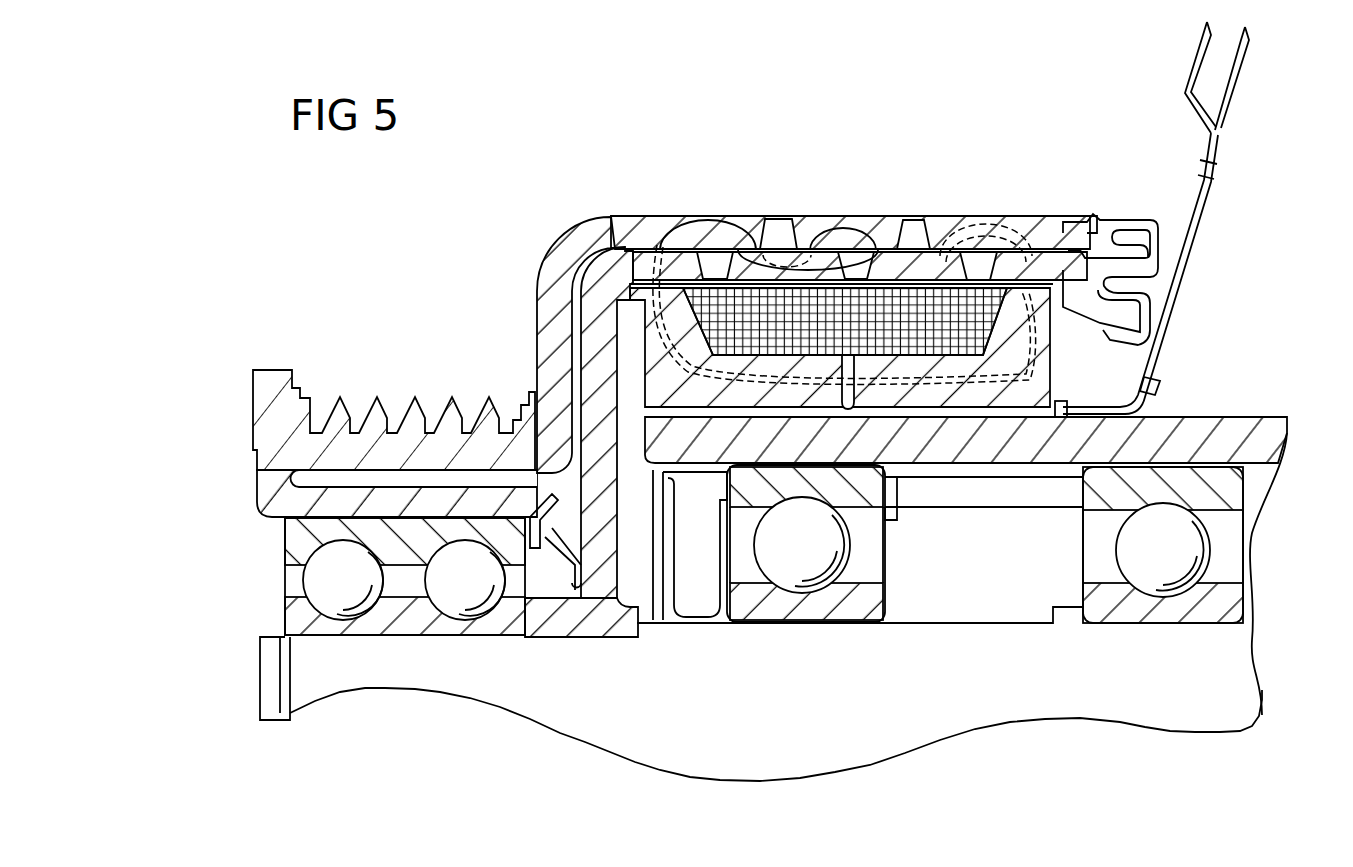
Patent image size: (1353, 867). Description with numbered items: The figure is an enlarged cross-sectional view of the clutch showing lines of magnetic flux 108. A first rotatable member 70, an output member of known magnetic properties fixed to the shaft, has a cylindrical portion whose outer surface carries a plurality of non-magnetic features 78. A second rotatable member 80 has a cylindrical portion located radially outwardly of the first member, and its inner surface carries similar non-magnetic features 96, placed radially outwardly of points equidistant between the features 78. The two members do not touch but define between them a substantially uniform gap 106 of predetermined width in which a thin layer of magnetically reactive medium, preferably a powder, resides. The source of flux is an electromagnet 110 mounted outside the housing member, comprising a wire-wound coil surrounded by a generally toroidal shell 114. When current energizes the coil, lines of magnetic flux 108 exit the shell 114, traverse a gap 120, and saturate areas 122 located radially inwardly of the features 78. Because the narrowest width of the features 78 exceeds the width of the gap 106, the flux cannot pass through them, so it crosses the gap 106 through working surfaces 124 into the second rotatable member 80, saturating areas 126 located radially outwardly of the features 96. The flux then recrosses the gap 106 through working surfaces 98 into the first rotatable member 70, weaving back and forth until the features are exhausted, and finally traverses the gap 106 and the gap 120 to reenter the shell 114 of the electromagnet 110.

The first rotatable member 70 is at (557, 637).
The features 78 is at (720, 262).
The second rotatable member 80 is at (271, 373).
The features 96 is at (905, 286).
The working surfaces 98 is at (748, 265).
The gap 106 is at (613, 232).
The lines of magnetic flux 108 is at (993, 220).
The electromagnet 110 is at (1063, 380).
The toroidal shell 114 is at (647, 350).
The gap 120 is at (1063, 287).
The areas 122 is at (668, 250).
The working surfaces 124 is at (690, 262).
The areas 126 is at (777, 222).